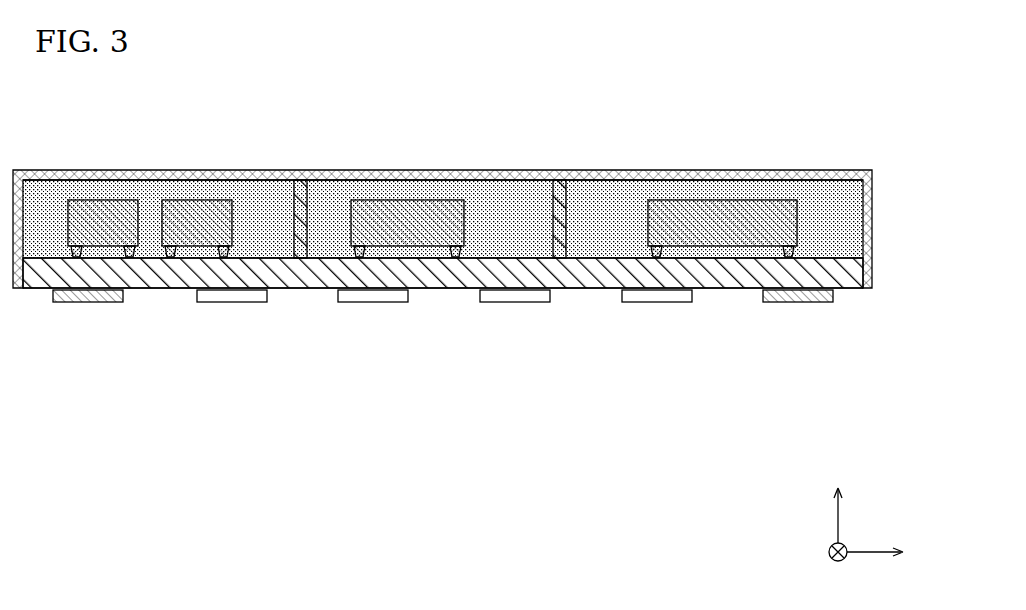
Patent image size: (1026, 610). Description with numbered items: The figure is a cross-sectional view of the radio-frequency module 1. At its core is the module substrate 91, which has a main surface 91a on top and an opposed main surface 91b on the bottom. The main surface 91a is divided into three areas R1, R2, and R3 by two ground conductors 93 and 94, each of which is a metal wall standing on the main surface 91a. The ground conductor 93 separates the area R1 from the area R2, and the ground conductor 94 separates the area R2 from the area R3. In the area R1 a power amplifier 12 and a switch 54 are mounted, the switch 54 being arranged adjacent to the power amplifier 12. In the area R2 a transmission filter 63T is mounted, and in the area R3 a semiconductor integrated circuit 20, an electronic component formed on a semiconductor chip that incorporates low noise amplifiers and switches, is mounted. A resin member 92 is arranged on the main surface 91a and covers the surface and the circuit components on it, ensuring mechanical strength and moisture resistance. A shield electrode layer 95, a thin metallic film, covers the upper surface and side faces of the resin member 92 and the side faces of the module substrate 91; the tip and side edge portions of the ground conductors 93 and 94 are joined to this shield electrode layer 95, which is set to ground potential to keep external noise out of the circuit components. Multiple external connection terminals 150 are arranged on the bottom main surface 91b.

The radio-frequency module 1 is at (848, 100).
The power amplifier 12 is at (67, 220).
The semiconductor integrated circuit 20 is at (648, 220).
The switch 54 is at (232, 222).
The transmission filter 63T is at (464, 220).
The module substrate 91 is at (862, 270).
The main surface 91a is at (853, 248).
The main surface 91b is at (853, 292).
The resin member 92 is at (840, 192).
The ground conductor 93 is at (301, 184).
The ground conductor 94 is at (560, 186).
The shield electrode layer 95 is at (433, 170).
The external connection terminals 150 is at (103, 302).
The first area R1 is at (287, 253).
The second area R2 is at (540, 253).
The third area R3 is at (612, 253).